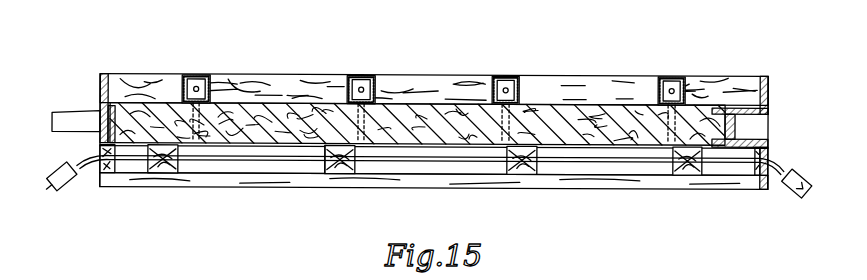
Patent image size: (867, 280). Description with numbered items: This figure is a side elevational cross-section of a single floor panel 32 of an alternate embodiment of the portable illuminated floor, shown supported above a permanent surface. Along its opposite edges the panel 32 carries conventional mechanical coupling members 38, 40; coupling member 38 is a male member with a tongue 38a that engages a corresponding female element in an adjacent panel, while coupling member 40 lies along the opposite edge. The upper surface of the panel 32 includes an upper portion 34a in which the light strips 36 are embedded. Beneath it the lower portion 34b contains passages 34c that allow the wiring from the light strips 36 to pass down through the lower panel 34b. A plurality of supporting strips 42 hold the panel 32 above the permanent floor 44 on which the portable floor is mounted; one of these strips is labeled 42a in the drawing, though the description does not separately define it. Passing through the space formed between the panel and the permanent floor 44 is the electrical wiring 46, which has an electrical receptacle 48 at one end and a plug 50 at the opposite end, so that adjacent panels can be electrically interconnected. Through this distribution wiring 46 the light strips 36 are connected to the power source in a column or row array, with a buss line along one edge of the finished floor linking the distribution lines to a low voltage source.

The panel 32 is at (424, 121).
The upper portion 34a is at (430, 74).
The lower portion 34b is at (270, 110).
The passages 34c is at (228, 97).
The light strips 36 is at (188, 76).
The coupling member 38 is at (100, 83).
The tongue 38a is at (52, 118).
The coupling member 40 is at (768, 89).
The supporting strips 42 is at (162, 173).
The spacer block edge 42a is at (353, 177).
The permanent floor 44 is at (288, 178).
The electrical wiring 46 is at (235, 163).
The electrical receptacle 48 is at (803, 176).
The plug 50 is at (68, 188).